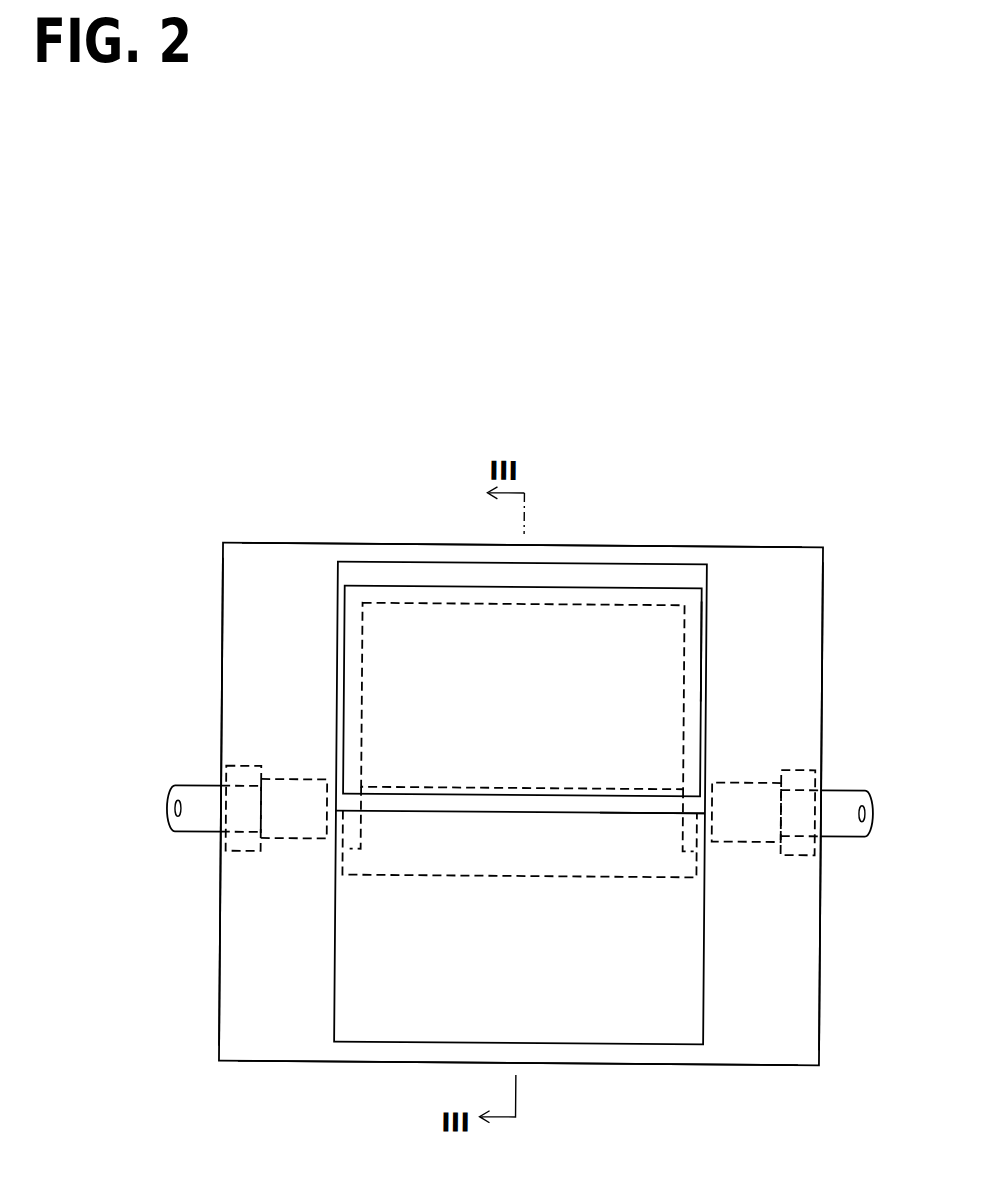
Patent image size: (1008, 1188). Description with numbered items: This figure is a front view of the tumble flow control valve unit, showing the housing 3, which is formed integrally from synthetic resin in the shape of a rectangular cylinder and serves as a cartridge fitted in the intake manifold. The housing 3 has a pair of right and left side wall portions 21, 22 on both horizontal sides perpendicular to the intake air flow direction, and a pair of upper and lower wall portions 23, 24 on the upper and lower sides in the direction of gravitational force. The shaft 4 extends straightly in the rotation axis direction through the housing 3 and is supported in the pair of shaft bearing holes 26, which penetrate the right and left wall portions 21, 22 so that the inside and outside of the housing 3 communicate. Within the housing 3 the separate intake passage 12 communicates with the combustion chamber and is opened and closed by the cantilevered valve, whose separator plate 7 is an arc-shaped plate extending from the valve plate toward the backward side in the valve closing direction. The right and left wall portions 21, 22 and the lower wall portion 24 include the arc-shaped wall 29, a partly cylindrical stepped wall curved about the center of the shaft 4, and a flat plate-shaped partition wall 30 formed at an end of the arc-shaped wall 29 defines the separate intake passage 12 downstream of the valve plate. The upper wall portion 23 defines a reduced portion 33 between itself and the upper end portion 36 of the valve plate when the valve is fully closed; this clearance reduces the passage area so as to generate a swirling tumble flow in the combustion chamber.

The housing 3 is at (268, 524).
The shaft 4 is at (198, 793).
The separator plate 7 is at (561, 712).
The separate intake passage 12 is at (700, 678).
The housing left wall portion 21 is at (239, 649).
The housing right wall portion 22 is at (803, 656).
The housing upper wall portion 23 is at (387, 546).
The housing lower wall portion 24 is at (384, 1066).
The shaft bearing holes 26 is at (224, 845).
The arc-shaped wall 29 is at (548, 968).
The partition wall 30 is at (633, 812).
The reduced portion 33 is at (449, 572).
The upper end portion 36 is at (655, 587).